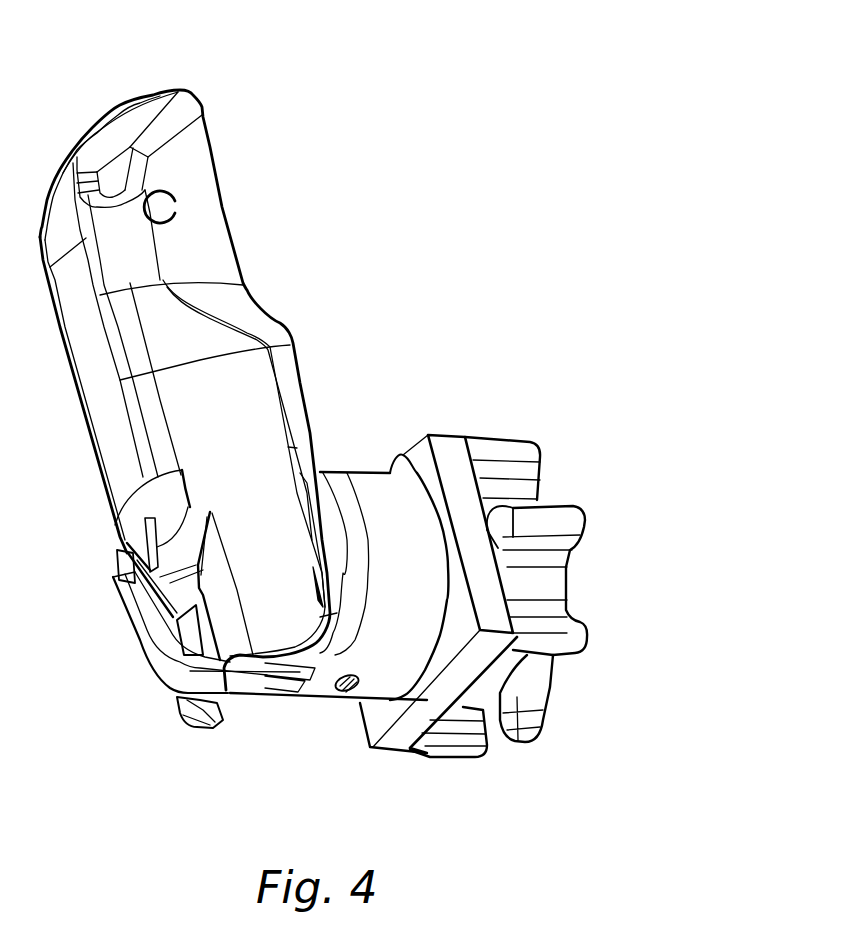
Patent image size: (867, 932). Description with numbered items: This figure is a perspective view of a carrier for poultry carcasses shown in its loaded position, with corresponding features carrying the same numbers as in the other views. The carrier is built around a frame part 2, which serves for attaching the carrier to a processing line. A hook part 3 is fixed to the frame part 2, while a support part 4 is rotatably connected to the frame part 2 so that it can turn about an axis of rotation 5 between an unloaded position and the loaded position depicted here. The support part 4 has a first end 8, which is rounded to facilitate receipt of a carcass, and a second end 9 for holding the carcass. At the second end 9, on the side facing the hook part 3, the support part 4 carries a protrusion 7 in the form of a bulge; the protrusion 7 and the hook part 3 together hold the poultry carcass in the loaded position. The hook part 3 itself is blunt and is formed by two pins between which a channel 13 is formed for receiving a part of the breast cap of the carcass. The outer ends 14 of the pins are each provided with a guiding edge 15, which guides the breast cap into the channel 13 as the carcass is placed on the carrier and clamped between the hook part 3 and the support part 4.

The frame part 2 is at (367, 487).
The hook part 3 is at (208, 697).
The support part 4 is at (192, 141).
The axis of rotation 5 is at (172, 205).
The protrusion 7 is at (193, 506).
The first end 8 is at (136, 96).
The second end 9 is at (258, 653).
The channel 13 is at (140, 620).
The outer ends 14 is at (123, 570).
The guiding edge 15 is at (127, 557).